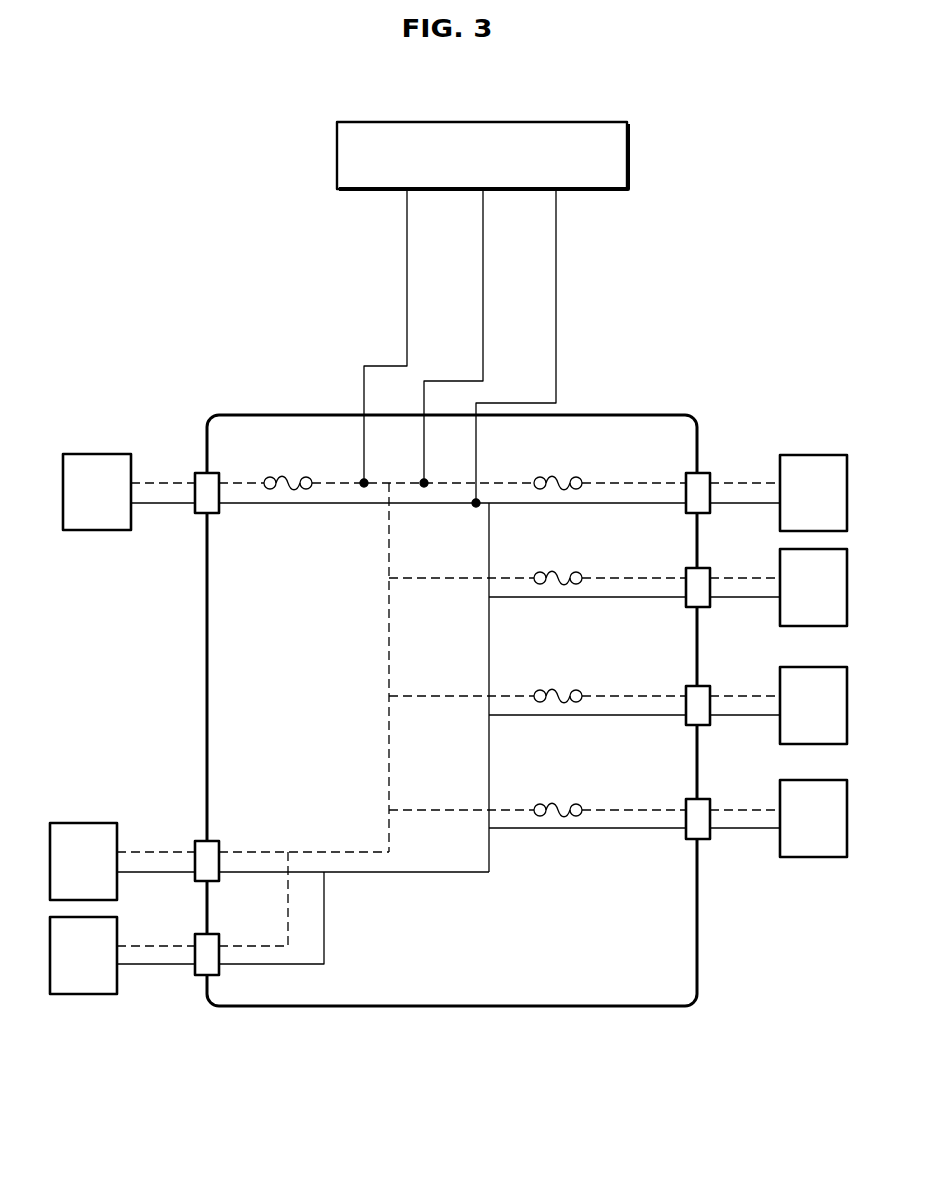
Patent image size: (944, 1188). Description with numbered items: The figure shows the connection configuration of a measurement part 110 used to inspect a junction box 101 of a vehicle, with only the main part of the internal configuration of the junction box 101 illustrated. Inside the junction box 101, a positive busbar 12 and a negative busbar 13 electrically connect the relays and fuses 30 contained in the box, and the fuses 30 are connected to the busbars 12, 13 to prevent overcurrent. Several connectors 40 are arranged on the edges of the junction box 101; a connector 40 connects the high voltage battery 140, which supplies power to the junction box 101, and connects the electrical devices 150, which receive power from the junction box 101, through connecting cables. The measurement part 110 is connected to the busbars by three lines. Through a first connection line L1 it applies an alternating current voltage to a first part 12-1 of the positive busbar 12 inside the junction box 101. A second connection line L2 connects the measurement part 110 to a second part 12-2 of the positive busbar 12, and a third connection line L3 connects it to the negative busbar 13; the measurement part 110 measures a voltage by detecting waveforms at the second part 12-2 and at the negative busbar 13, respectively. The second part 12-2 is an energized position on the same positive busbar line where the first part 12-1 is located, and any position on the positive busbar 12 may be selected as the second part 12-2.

The junction box 101 is at (698, 928).
The measurement part 110 is at (463, 167).
The first connection line L1 is at (407, 350).
The second connection line L2 is at (483, 352).
The third connection line L3 is at (556, 377).
The positive busbar 12 is at (333, 477).
The first part of the positive busbar 12-1 is at (362, 489).
The second part of the positive busbar 12-2 is at (427, 489).
The negative busbar 13 is at (624, 500).
The fuse 30 is at (288, 477).
The connector 40 is at (202, 480).
The high voltage battery 140 is at (77, 510).
The electrical device 150 is at (793, 510).